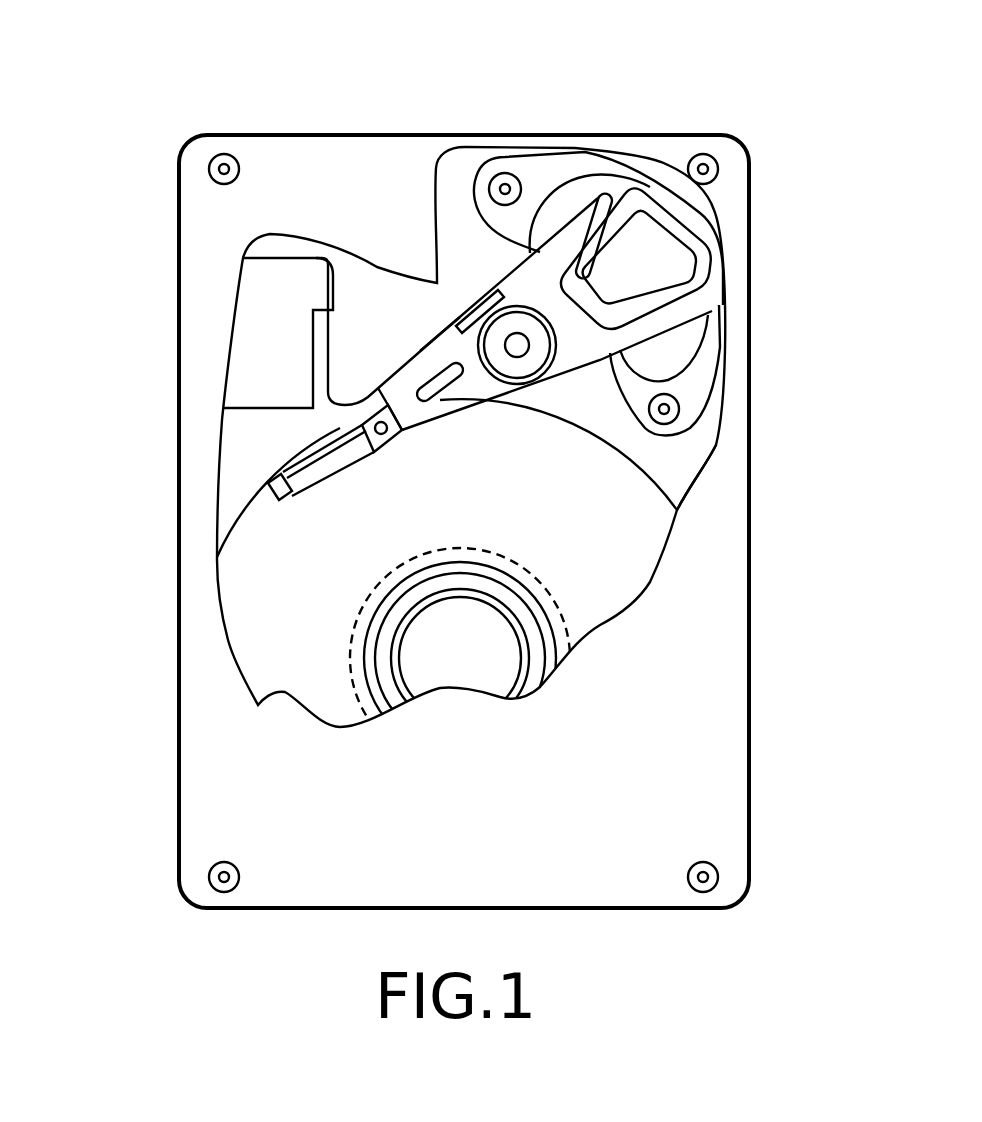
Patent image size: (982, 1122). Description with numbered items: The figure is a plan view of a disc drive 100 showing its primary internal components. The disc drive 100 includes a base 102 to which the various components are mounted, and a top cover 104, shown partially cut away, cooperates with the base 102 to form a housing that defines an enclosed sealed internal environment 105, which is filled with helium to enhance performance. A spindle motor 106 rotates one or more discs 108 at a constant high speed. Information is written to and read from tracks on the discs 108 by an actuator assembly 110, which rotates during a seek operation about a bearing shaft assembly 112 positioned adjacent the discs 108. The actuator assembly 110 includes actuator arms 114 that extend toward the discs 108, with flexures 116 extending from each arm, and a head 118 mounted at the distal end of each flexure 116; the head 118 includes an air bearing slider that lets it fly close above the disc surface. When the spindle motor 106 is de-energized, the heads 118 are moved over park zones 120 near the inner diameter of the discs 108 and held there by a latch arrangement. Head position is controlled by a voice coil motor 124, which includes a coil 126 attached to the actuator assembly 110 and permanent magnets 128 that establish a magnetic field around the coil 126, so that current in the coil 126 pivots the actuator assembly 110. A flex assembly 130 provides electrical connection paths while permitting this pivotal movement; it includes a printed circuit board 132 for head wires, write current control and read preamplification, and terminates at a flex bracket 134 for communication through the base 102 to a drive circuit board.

The disc drive 100 is at (215, 90).
The base 102 is at (250, 468).
The top cover 104 is at (230, 758).
The internal environment 105 is at (699, 457).
The spindle motor 106 is at (462, 663).
The disc 108 is at (623, 577).
The actuator assembly 110 is at (497, 428).
The bearing shaft assembly 112 is at (530, 358).
The actuator arm 114 is at (450, 403).
The flexure 116 is at (325, 463).
The head 118 is at (268, 502).
The park zone 120 is at (346, 653).
The voice coil motor 124 is at (540, 135).
The coil 126 is at (697, 260).
The permanent magnet 128 is at (547, 217).
The flex assembly 130 is at (440, 353).
The printed circuit board 132 is at (463, 300).
The flex bracket 134 is at (263, 347).